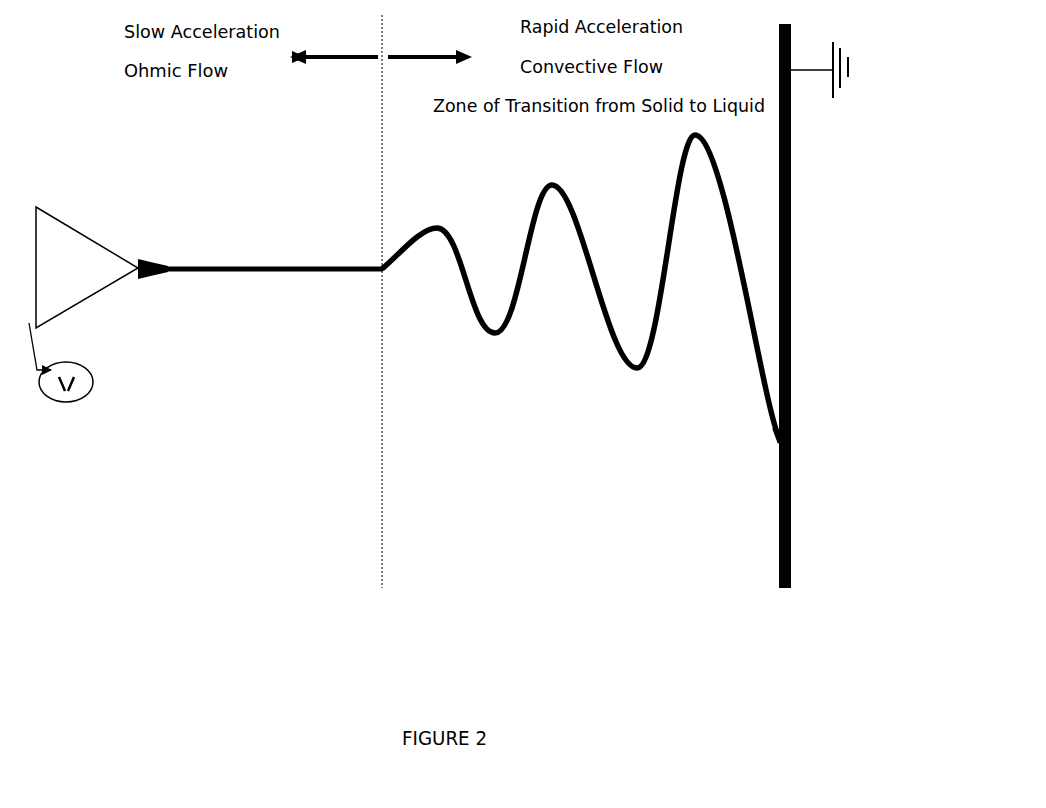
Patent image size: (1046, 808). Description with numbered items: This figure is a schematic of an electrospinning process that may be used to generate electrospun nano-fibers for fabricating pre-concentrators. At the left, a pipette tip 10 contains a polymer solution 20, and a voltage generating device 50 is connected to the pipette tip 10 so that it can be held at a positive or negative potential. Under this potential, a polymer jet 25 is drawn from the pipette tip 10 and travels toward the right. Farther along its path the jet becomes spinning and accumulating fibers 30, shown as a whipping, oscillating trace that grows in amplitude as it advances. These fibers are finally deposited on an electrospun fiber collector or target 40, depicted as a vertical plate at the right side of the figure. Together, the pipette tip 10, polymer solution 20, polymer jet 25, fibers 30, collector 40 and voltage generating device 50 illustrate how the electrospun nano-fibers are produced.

The pipette tip 10 is at (128, 250).
The polymer solution 20 is at (87, 267).
The polymer jet 25 is at (202, 282).
The spinning and accumulating fibers 30 is at (526, 207).
The electrospun fiber collector or target 40 is at (796, 483).
The voltage generating device 50 is at (66, 414).